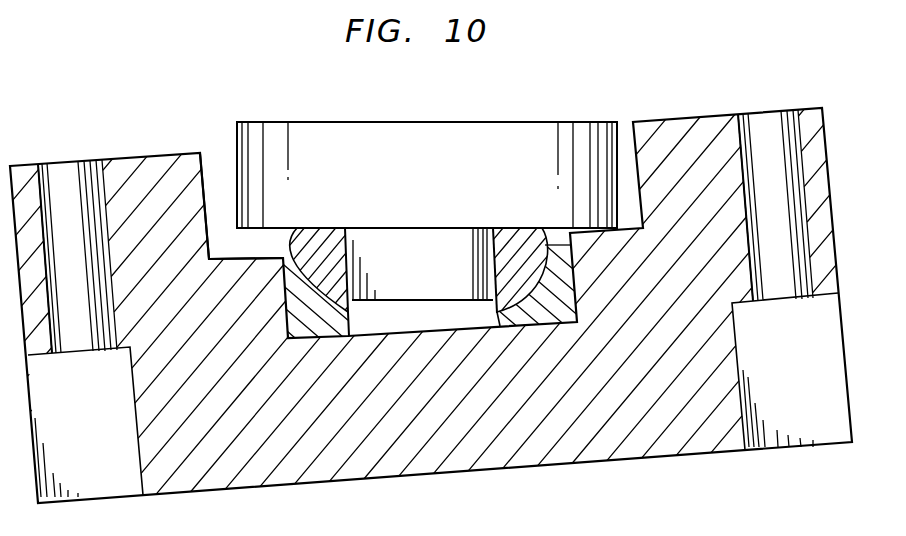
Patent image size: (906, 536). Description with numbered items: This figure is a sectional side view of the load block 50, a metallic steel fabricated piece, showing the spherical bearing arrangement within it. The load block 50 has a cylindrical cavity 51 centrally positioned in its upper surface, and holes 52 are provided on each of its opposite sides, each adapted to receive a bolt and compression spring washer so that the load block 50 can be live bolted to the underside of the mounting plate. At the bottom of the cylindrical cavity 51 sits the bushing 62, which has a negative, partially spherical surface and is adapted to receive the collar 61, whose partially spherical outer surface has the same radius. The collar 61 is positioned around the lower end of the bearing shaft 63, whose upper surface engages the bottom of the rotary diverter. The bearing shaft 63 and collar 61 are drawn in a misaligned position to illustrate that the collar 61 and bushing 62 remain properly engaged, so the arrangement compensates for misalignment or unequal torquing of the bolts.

The load block 50 is at (167, 185).
The cylindrical cavity 51 is at (218, 165).
The holes 52 is at (65, 180).
The collar 61 is at (520, 243).
The bushing 62 is at (285, 258).
The bearing shaft 63 is at (445, 191).